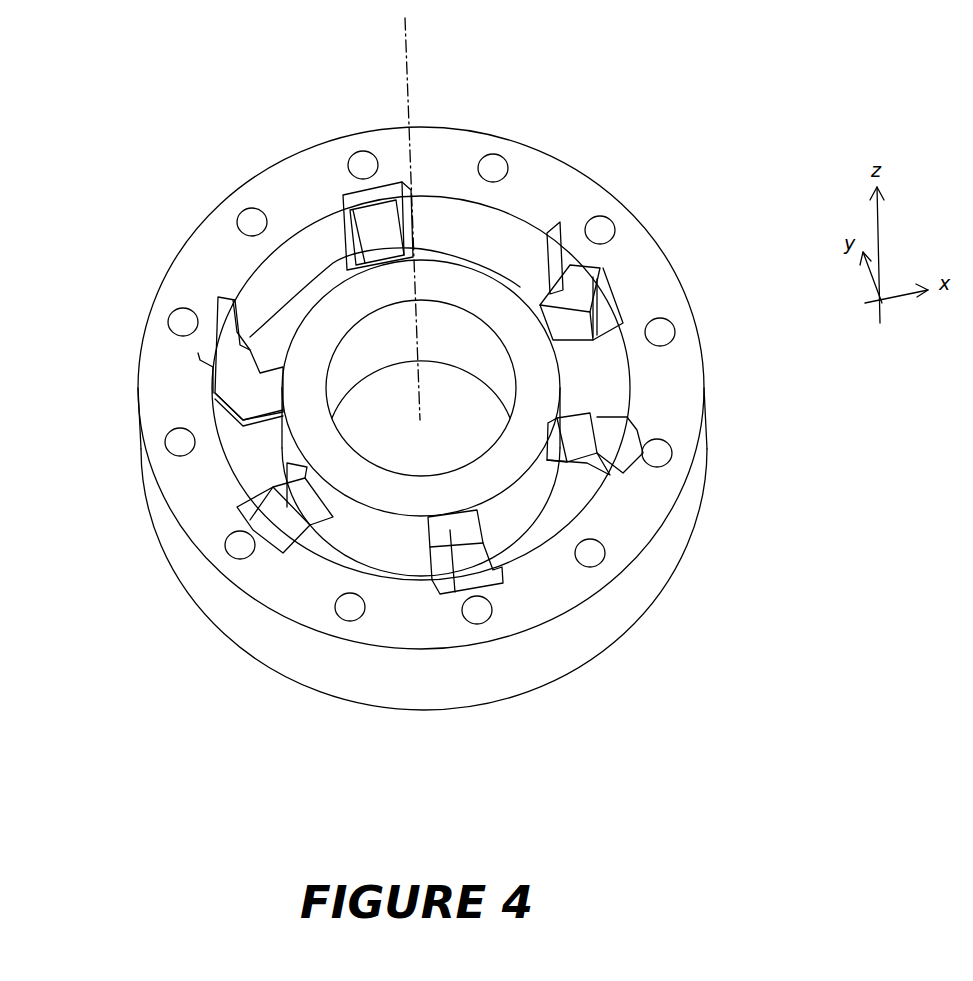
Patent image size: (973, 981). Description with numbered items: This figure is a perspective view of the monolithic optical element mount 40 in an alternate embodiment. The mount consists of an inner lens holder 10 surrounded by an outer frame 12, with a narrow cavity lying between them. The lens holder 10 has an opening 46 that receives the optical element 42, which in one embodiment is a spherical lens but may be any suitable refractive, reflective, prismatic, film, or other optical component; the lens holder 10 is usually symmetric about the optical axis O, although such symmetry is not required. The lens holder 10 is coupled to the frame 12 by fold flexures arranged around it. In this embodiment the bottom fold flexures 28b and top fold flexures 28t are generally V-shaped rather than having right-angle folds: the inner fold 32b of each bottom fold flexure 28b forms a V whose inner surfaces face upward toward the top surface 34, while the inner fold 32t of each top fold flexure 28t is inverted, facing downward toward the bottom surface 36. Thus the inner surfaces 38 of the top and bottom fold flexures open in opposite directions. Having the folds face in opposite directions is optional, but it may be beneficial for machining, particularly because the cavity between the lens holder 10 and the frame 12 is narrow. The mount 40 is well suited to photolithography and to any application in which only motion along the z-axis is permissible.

The lens holder 10 is at (341, 292).
The frame 12 is at (650, 570).
The bottom fold flexures 28b is at (572, 295).
The top fold flexures 28t is at (612, 442).
The inner fold of bottom fold flexure 32b is at (555, 323).
The inner fold of top fold flexure 32t is at (589, 445).
The top surface 34 is at (148, 375).
The bottom surface 36 is at (183, 580).
The inner surfaces 38 is at (450, 532).
The optical element mount 40 is at (63, 747).
The optical element 42 is at (432, 390).
The opening 46 is at (443, 433).
The optical axis O is at (412, 88).